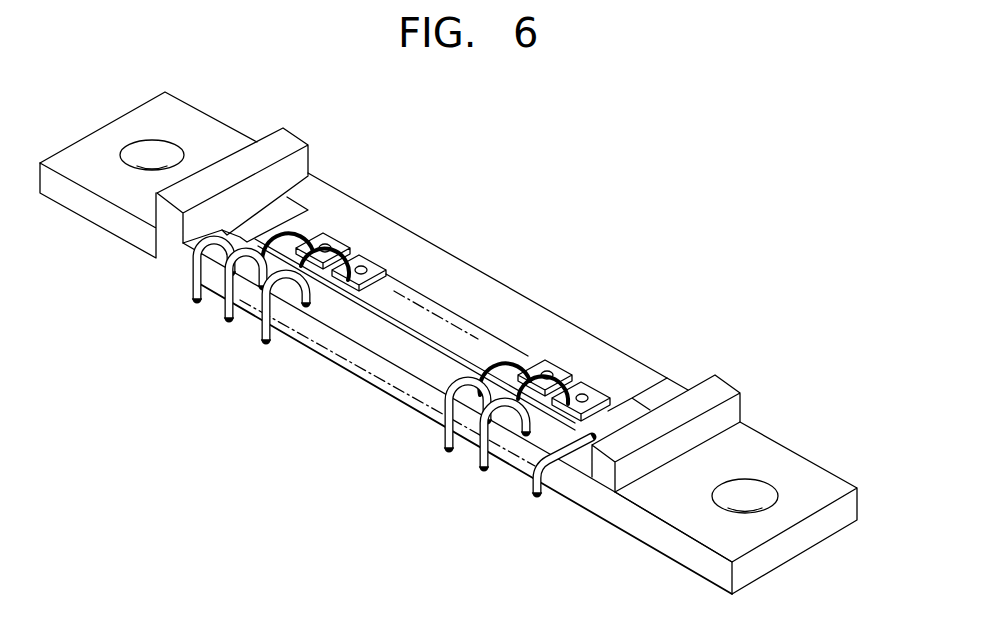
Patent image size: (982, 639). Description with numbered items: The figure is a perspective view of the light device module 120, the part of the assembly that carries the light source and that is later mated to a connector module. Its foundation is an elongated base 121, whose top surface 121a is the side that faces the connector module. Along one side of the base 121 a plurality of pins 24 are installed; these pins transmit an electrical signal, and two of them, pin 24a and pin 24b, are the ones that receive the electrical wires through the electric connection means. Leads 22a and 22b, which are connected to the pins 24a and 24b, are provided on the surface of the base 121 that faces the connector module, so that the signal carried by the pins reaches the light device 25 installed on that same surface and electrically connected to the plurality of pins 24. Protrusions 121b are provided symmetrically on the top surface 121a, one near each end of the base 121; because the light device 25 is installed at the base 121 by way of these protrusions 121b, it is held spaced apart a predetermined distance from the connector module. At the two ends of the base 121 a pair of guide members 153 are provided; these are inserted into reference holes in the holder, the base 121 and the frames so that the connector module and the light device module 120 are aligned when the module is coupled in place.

The light device module 120 is at (676, 568).
The base 121 is at (88, 203).
The top surface 121a is at (178, 115).
The protrusions 121b is at (175, 218).
The guide members 153 is at (145, 150).
The lead 22a is at (283, 205).
The lead 22b is at (633, 406).
The pins 24 is at (250, 325).
The pin 24a is at (195, 293).
The pin 24b is at (543, 497).
The light device 25 is at (375, 260).